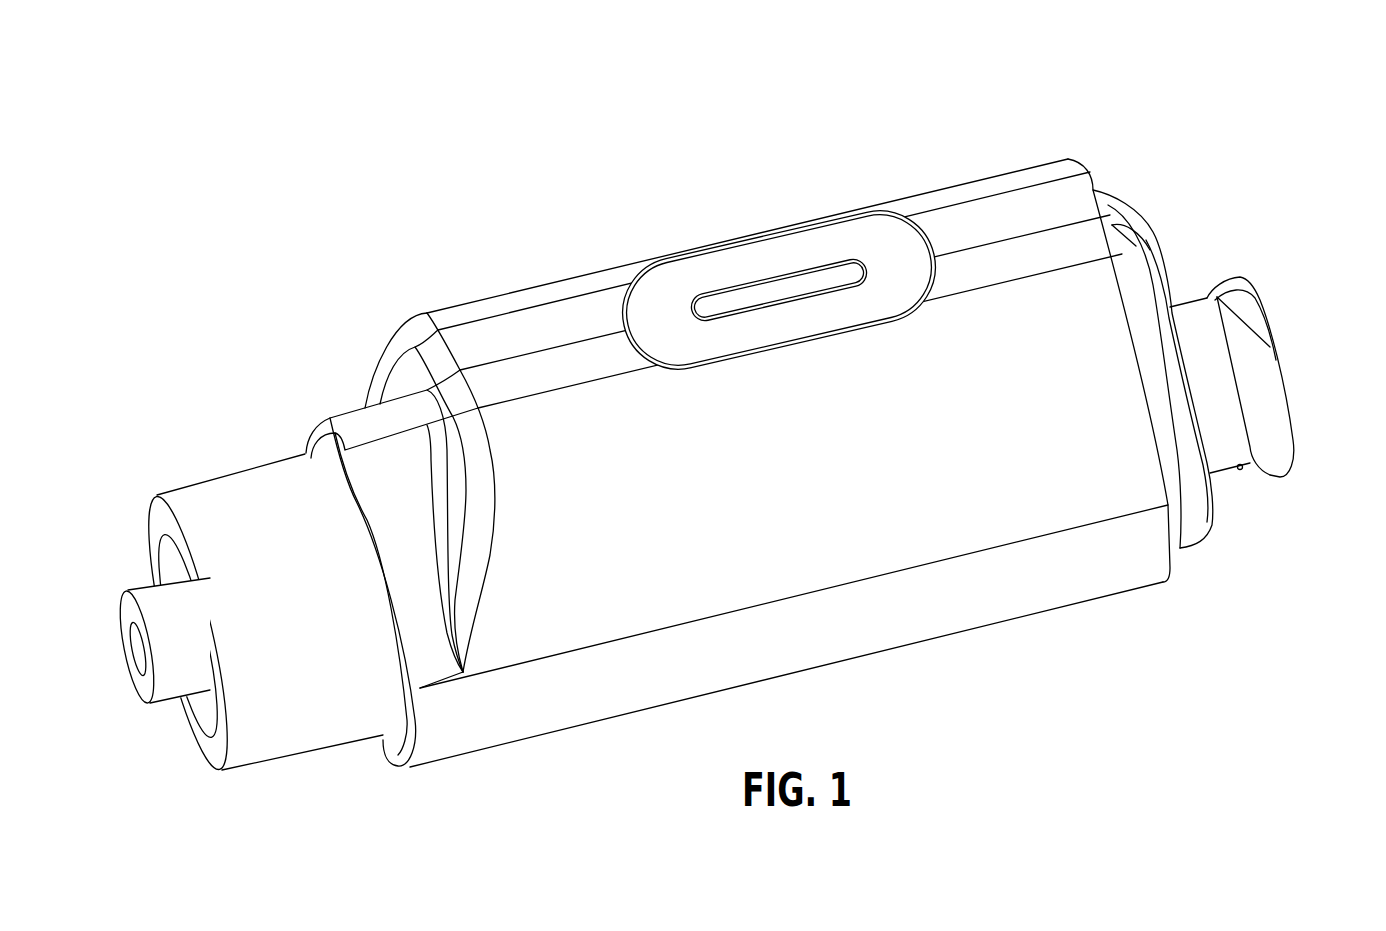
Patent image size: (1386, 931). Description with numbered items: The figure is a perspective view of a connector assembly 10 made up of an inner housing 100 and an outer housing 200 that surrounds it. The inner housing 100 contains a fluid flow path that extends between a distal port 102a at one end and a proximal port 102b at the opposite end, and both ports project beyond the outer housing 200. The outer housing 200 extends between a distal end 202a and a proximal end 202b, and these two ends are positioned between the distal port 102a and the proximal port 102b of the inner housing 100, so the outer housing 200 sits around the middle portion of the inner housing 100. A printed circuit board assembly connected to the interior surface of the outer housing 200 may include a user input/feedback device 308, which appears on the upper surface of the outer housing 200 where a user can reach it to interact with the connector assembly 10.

The connector assembly 10 is at (1168, 92).
The inner housing 100 is at (290, 752).
The distal port 102a is at (135, 690).
The proximal port 102b is at (1285, 367).
The outer housing 200 is at (470, 310).
The distal end 202a is at (306, 425).
The proximal end 202b is at (1093, 173).
The user input/feedback device 308 is at (740, 247).